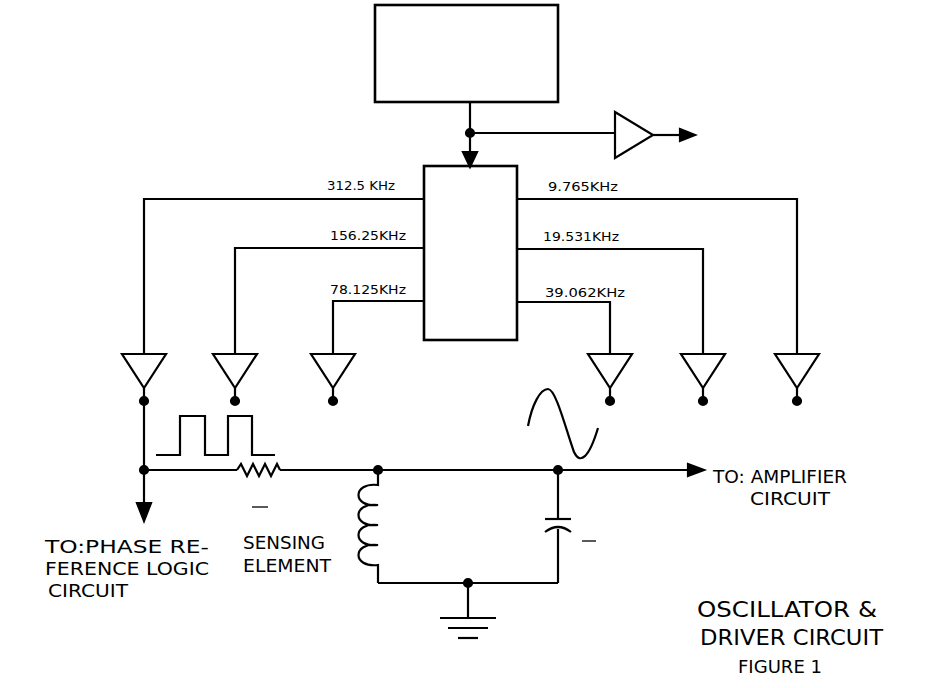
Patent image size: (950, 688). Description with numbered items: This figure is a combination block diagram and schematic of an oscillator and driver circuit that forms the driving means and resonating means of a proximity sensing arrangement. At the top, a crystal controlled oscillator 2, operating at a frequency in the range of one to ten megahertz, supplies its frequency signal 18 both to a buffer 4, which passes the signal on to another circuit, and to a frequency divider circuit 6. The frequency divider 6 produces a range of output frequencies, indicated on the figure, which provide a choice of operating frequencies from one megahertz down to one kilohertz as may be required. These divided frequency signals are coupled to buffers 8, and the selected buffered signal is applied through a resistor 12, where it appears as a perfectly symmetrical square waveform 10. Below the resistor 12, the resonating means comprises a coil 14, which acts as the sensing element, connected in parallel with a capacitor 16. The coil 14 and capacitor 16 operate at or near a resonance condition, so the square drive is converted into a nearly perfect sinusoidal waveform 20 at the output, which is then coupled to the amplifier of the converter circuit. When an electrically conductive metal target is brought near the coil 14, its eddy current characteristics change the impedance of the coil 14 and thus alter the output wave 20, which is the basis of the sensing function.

The crystal controlled oscillator 2 is at (372, 52).
The buffer 4 is at (636, 114).
The frequency divider circuit 6 is at (441, 162).
The buffers 8 is at (133, 374).
The square waveform 10 is at (255, 434).
The resistor 12 is at (270, 478).
The coil 14 is at (380, 537).
The capacitor 16 is at (563, 538).
The frequency signal 18 is at (695, 137).
The sinusoidal waveform 20 is at (533, 402).